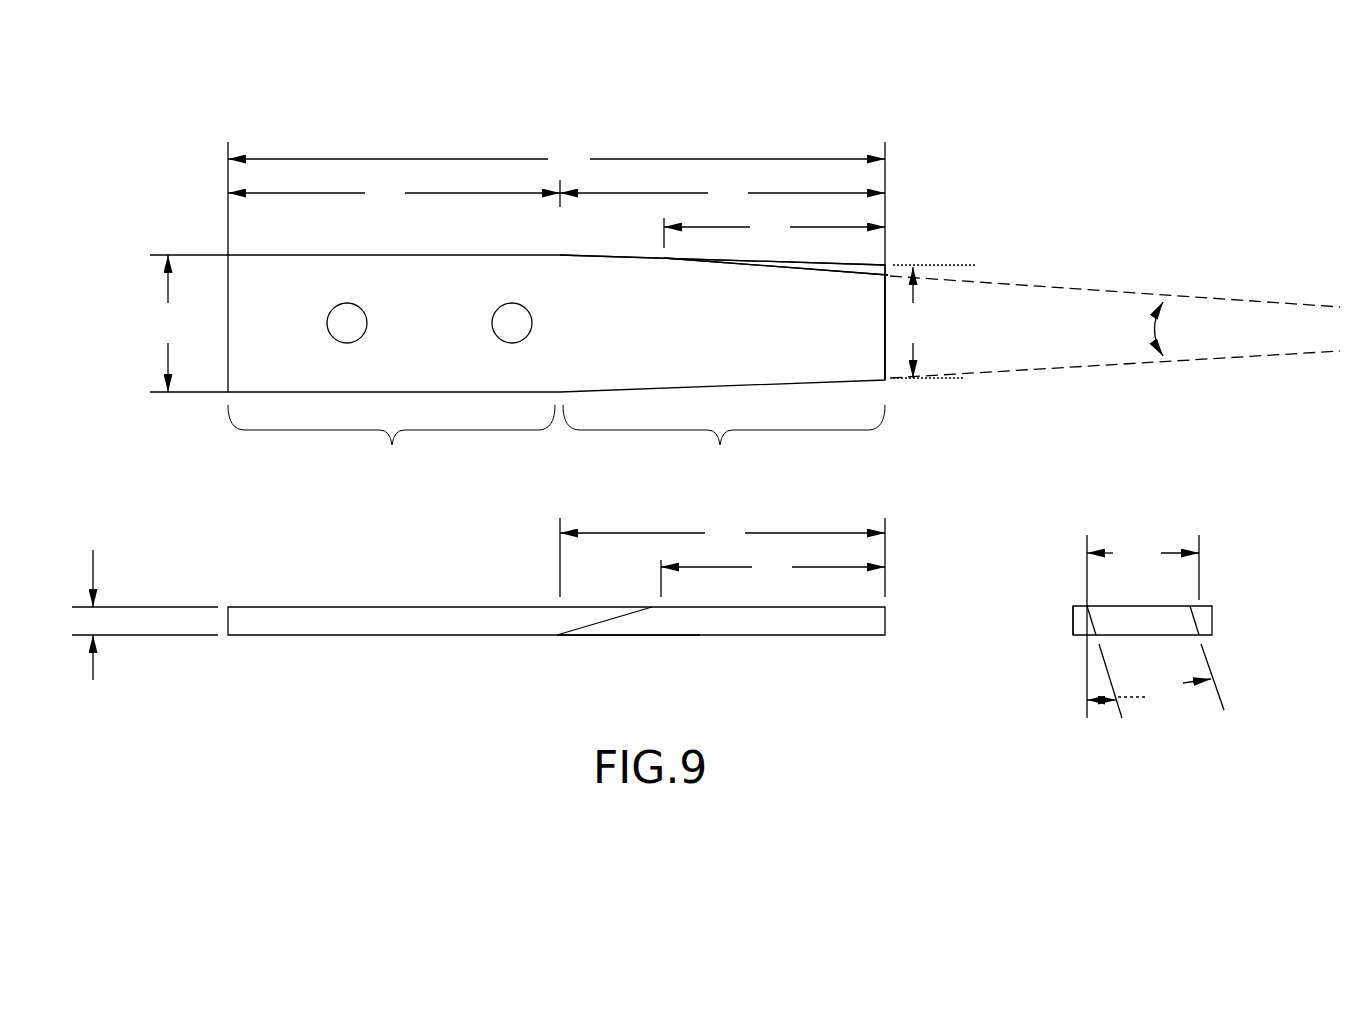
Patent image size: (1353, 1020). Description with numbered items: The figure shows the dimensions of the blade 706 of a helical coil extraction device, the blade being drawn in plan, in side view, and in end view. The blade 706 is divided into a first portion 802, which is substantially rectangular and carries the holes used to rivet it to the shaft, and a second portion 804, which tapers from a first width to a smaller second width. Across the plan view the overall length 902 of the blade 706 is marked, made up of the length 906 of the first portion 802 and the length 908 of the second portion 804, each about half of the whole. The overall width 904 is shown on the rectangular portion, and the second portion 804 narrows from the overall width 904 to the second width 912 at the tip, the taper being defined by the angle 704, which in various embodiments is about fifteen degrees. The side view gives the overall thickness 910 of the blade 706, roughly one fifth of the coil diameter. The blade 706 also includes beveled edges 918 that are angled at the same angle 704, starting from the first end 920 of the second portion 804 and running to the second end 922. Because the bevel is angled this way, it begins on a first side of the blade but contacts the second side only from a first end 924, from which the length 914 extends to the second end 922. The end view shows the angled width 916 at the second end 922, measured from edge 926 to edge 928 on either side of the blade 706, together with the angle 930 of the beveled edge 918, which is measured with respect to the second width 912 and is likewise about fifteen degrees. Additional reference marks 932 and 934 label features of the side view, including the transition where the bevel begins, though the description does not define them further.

The angle 704 is at (1153, 330).
The blade 706 is at (999, 173).
The first portion 802 is at (391, 443).
The second portion 804 is at (724, 443).
The overall length 902 is at (556, 203).
The overall width 904 is at (183, 323).
The length of the first portion 906 is at (394, 192).
The length of the second portion 908 is at (722, 387).
The overall thickness 910 is at (474, 598).
The second width 912 is at (1046, 491).
The length 914 is at (773, 404).
The angled width 916 is at (1149, 681).
The beveled edges 918 is at (882, 260).
The first end of the second portion 920 is at (563, 264).
The second end of the second portion 922 is at (880, 293).
The first end of the length 924 is at (666, 272).
The edge 926 is at (1086, 599).
The edge 928 is at (1194, 599).
The angle of the beveled edge 930 is at (1100, 704).
The chamfer start 932 is at (652, 602).
The chamfer face 934 is at (647, 639).